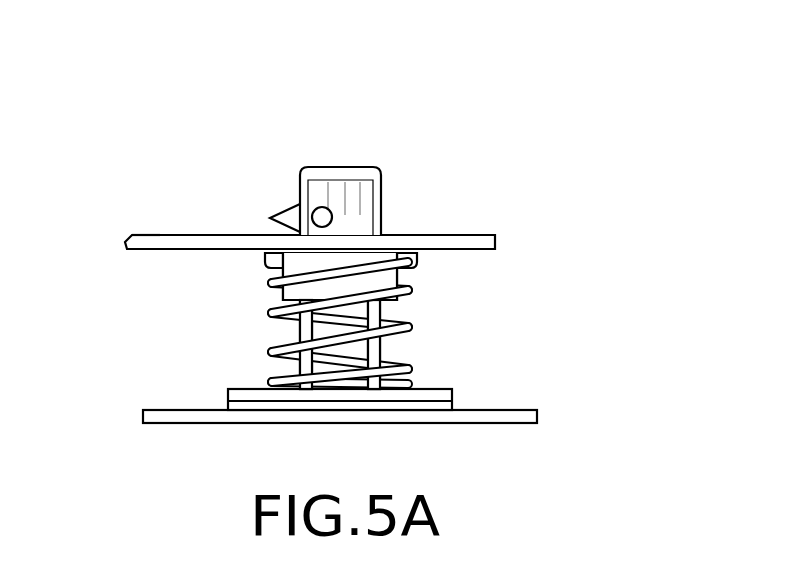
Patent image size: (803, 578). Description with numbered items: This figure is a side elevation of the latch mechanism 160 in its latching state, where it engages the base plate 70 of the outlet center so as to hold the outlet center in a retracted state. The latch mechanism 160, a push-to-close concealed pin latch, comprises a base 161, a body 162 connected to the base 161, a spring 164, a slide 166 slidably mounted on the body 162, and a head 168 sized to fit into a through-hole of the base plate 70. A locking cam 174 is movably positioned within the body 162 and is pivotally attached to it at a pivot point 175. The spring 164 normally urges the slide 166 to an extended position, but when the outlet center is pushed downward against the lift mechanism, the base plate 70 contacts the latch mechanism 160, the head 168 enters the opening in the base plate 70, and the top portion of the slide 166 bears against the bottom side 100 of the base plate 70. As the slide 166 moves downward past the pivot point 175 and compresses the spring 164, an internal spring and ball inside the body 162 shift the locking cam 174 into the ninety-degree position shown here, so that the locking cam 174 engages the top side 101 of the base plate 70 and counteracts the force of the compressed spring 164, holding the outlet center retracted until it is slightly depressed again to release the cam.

The base plate 70 is at (145, 235).
The bottom side 100 is at (185, 249).
The top side 101 is at (218, 235).
The latch mechanism 160 is at (384, 212).
The base 161 is at (498, 410).
The body 162 is at (395, 310).
The spring 164 is at (263, 313).
The slide 166 is at (400, 273).
The head 168 is at (358, 168).
The locking cam 174 is at (286, 210).
The pivot point 175 is at (323, 207).